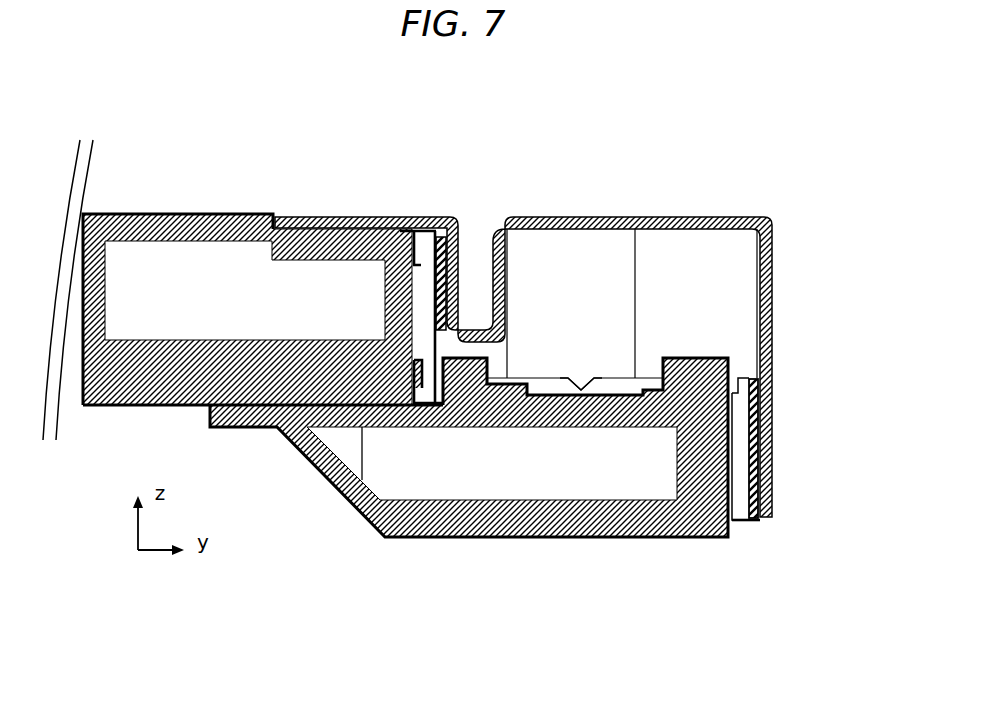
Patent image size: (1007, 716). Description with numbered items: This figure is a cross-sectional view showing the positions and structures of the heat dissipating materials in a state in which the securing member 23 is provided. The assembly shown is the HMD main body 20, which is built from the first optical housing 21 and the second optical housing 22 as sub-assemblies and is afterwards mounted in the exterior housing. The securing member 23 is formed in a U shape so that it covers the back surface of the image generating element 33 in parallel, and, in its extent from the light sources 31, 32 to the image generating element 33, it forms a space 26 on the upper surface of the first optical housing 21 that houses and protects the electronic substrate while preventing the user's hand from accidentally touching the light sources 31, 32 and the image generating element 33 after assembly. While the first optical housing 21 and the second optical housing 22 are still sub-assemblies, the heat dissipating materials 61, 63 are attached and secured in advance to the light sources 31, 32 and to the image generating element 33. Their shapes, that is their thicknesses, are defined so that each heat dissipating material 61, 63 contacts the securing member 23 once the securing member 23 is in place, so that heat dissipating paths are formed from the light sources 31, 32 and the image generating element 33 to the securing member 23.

The HMD main body 20 is at (320, 180).
The first optical housing 21 is at (500, 495).
The second optical housing 22 is at (183, 257).
The securing member 23 is at (617, 213).
The space 26 is at (697, 270).
The light source 31 is at (741, 505).
The light source 32 is at (607, 383).
The image generating element 33 is at (432, 248).
The heat dissipating material 61 is at (755, 437).
The heat dissipating material 63 is at (441, 267).